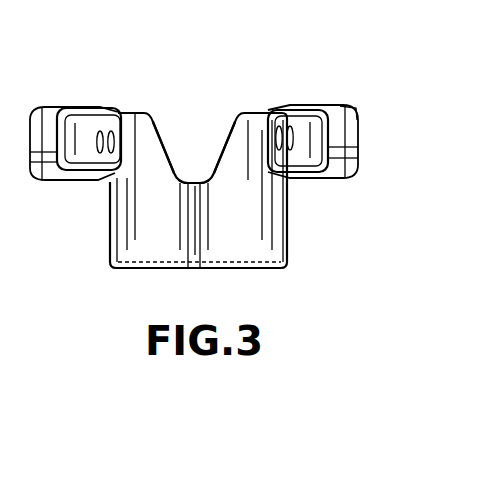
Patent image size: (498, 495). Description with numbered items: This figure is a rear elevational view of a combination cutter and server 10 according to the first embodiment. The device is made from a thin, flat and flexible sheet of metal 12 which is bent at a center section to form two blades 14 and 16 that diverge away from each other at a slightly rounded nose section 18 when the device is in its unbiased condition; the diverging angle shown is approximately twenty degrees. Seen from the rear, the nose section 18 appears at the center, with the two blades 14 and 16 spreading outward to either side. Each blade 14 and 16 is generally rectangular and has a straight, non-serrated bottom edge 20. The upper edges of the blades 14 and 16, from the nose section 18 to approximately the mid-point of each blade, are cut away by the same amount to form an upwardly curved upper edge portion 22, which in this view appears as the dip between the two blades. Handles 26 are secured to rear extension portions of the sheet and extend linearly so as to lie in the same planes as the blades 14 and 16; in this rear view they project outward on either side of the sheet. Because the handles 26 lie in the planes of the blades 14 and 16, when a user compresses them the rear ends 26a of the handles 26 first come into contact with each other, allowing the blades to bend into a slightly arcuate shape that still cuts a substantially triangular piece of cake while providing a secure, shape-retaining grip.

The combination cutter and server 10 is at (345, 95).
The thin, flat and flexible sheet of metal 12 is at (104, 240).
The blade 14 is at (283, 228).
The blade 16 is at (110, 186).
The slightly rounded nose section 18 is at (198, 187).
The straight, non-serrated bottom edge 20 is at (133, 273).
The upwardly curved upper edge portion 22 is at (150, 124).
The handle 26 is at (87, 110).
The rear end of handle 26a is at (353, 110).